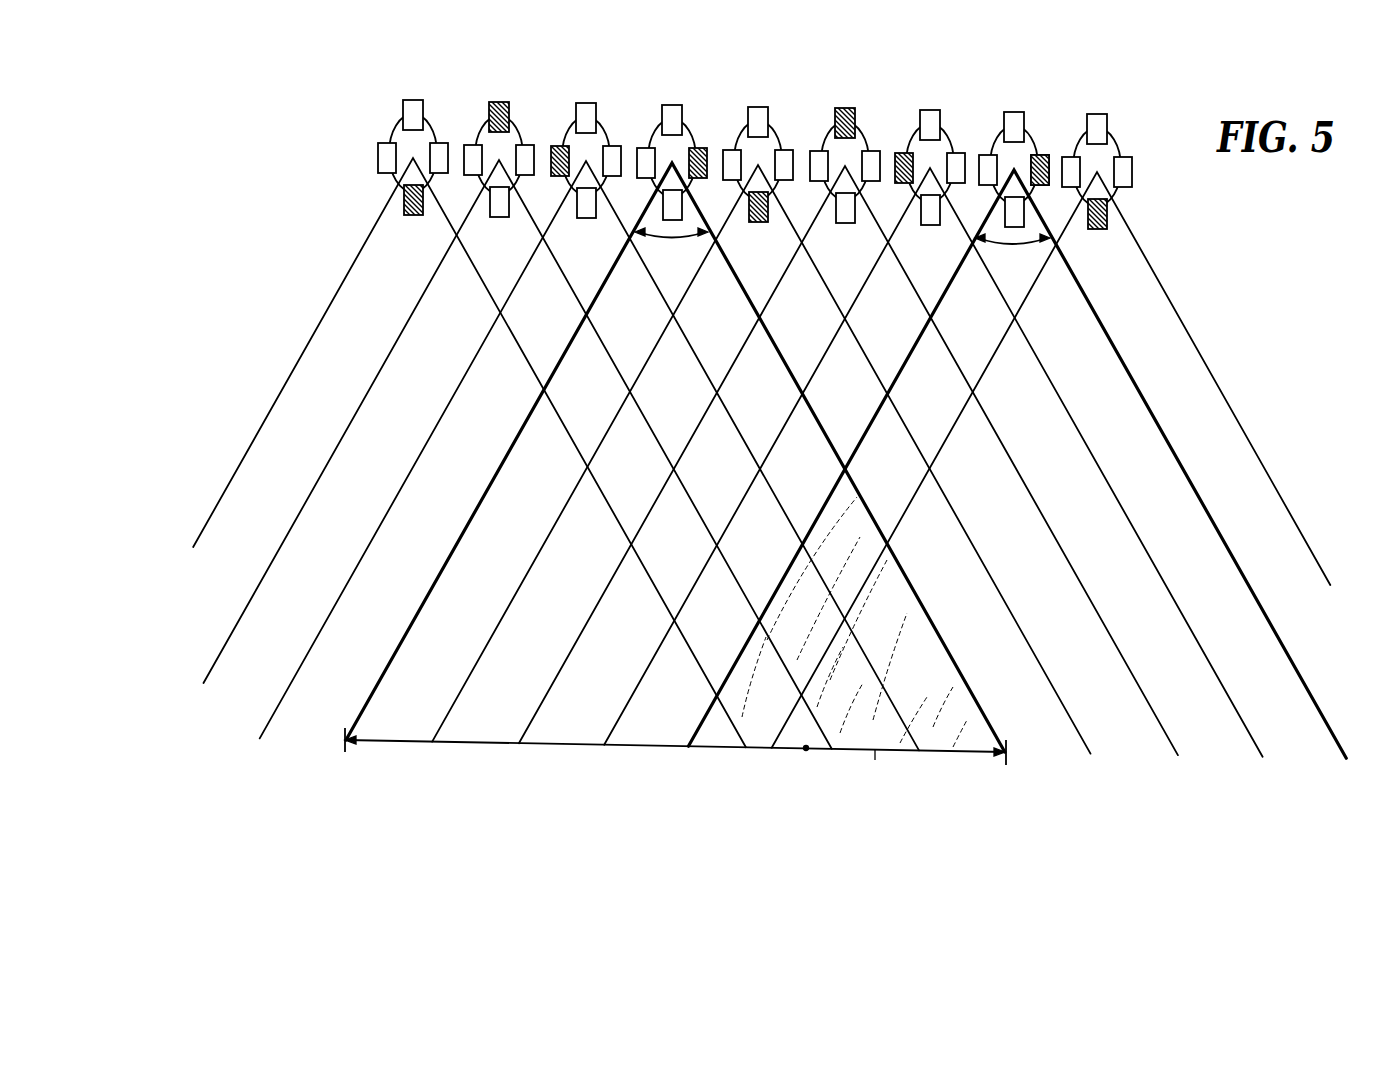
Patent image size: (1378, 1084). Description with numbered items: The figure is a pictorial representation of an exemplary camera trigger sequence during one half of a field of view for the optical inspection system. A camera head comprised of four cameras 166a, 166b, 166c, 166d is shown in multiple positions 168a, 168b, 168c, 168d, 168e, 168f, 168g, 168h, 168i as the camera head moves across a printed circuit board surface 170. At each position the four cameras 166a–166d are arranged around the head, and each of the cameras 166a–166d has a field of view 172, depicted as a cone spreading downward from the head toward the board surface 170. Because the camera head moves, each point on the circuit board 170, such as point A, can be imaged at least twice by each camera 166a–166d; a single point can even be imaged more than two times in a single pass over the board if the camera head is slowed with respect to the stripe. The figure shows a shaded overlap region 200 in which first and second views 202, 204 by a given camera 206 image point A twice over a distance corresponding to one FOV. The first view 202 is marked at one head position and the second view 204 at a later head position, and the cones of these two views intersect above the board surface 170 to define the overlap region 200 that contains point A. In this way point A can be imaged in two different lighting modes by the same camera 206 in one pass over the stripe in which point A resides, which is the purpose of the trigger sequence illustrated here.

The camera 166a is at (378, 152).
The camera 166b is at (403, 110).
The camera 166c is at (440, 145).
The camera 166d is at (405, 203).
The camera head position 168a is at (388, 127).
The camera head position 168b is at (498, 94).
The camera head position 168c is at (585, 97).
The camera head position 168d is at (834, 131).
The camera head position 168e is at (755, 98).
The camera head position 168f is at (840, 99).
The camera head position 168g is at (926, 102).
The camera head position 168h is at (1010, 104).
The camera head position 168i is at (1093, 105).
The printed circuit board surface 170 is at (592, 748).
The field of view 172 is at (443, 227).
The overlap region 200 is at (900, 653).
The first view 202 is at (672, 238).
The second view 204 is at (1012, 244).
The given camera 206 is at (876, 137).
The point A is at (805, 754).
The field of view distance FOV is at (876, 752).